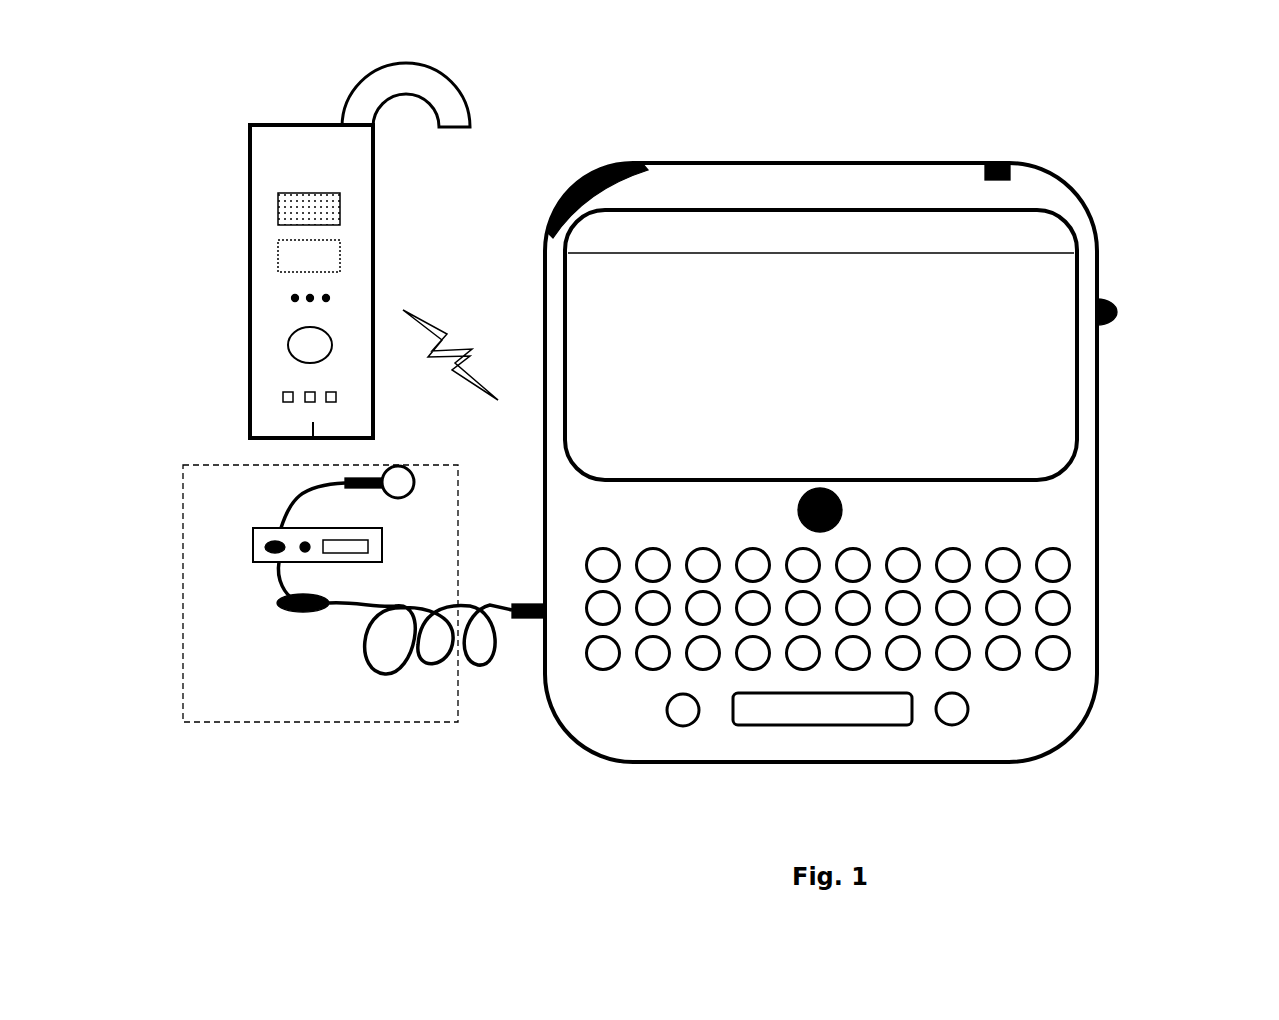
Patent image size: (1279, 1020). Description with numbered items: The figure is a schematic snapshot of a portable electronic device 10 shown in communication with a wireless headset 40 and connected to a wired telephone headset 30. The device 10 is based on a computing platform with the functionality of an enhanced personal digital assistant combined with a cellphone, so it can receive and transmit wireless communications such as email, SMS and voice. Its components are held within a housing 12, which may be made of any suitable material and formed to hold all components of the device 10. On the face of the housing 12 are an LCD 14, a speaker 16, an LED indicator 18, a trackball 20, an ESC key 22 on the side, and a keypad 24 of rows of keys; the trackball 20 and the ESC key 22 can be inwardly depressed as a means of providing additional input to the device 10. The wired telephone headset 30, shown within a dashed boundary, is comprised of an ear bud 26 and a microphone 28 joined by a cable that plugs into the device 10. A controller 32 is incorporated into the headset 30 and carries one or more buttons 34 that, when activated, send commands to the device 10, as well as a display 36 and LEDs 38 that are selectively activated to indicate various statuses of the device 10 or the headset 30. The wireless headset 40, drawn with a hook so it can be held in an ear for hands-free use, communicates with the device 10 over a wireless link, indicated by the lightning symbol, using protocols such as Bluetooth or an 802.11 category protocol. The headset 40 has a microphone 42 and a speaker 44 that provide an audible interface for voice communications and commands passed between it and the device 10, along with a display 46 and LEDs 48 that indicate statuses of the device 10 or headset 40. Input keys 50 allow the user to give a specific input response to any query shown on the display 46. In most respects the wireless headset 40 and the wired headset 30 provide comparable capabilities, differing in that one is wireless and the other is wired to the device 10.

The portable electronic device 10 is at (717, 785).
The housing 12 is at (912, 747).
The LCD 14 is at (630, 423).
The speaker 16 is at (548, 198).
The LED indicator 18 is at (1022, 176).
The trackball 20 is at (867, 511).
The ESC key 22 is at (1123, 310).
The keypad 24 is at (1078, 562).
The ear bud 26 is at (423, 477).
The microphone 28 is at (300, 623).
The wired telephone headset 30 is at (305, 730).
The controller 32 is at (255, 563).
The buttons 34 is at (258, 538).
The display 36 is at (385, 562).
The LEDs 38 is at (310, 535).
The wireless headset 40 is at (360, 250).
The microphone 42 is at (268, 343).
The speaker 44 is at (265, 213).
The display 46 is at (352, 258).
The LEDs 48 is at (268, 295).
The input keys 50 is at (313, 438).